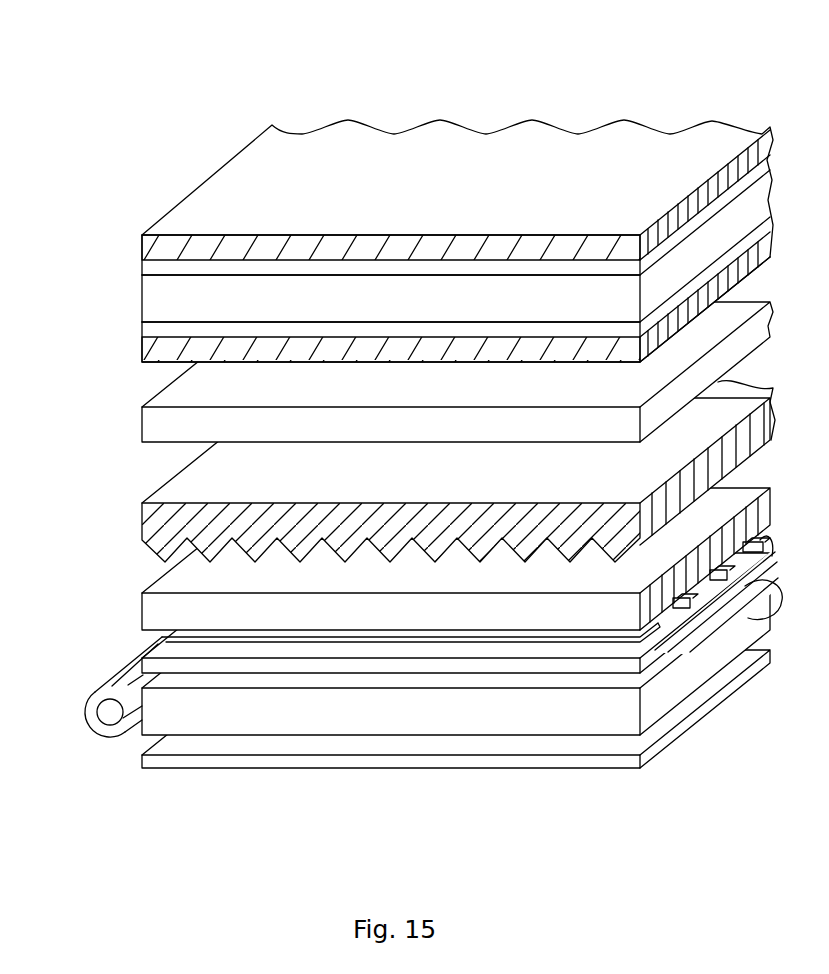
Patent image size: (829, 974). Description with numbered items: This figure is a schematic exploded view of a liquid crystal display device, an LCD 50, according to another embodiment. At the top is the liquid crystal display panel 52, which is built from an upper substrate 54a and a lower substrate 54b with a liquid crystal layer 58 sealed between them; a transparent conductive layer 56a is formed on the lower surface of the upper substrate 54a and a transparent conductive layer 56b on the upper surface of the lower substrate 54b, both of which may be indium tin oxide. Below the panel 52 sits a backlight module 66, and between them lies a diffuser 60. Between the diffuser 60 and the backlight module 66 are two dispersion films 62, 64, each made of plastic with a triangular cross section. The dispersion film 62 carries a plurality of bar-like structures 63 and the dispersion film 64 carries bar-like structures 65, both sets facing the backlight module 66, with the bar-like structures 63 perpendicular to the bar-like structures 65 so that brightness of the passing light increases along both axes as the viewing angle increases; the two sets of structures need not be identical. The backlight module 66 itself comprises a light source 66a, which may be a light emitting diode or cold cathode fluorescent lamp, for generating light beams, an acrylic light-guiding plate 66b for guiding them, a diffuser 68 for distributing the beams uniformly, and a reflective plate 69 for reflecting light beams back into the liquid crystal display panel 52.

The LCD 50 is at (690, 57).
The liquid crystal display panel 52 is at (395, 241).
The upper substrate 54a is at (152, 249).
The lower substrate 54b is at (68, 240).
The transparent conductive layer 56a is at (166, 270).
The transparent conductive layer 56b is at (166, 326).
The liquid crystal layer 58 is at (166, 295).
The diffuser 60 is at (165, 424).
The dispersion film 62 is at (454, 472).
The bar-like structures 63 is at (165, 548).
The dispersion film 64 is at (160, 607).
The bar-like structures 65 is at (764, 557).
The backlight module 66 is at (422, 734).
The light source 66a is at (113, 716).
The light-guiding plate 66b is at (207, 720).
The diffuser 68 is at (758, 612).
The reflective plate 69 is at (722, 697).